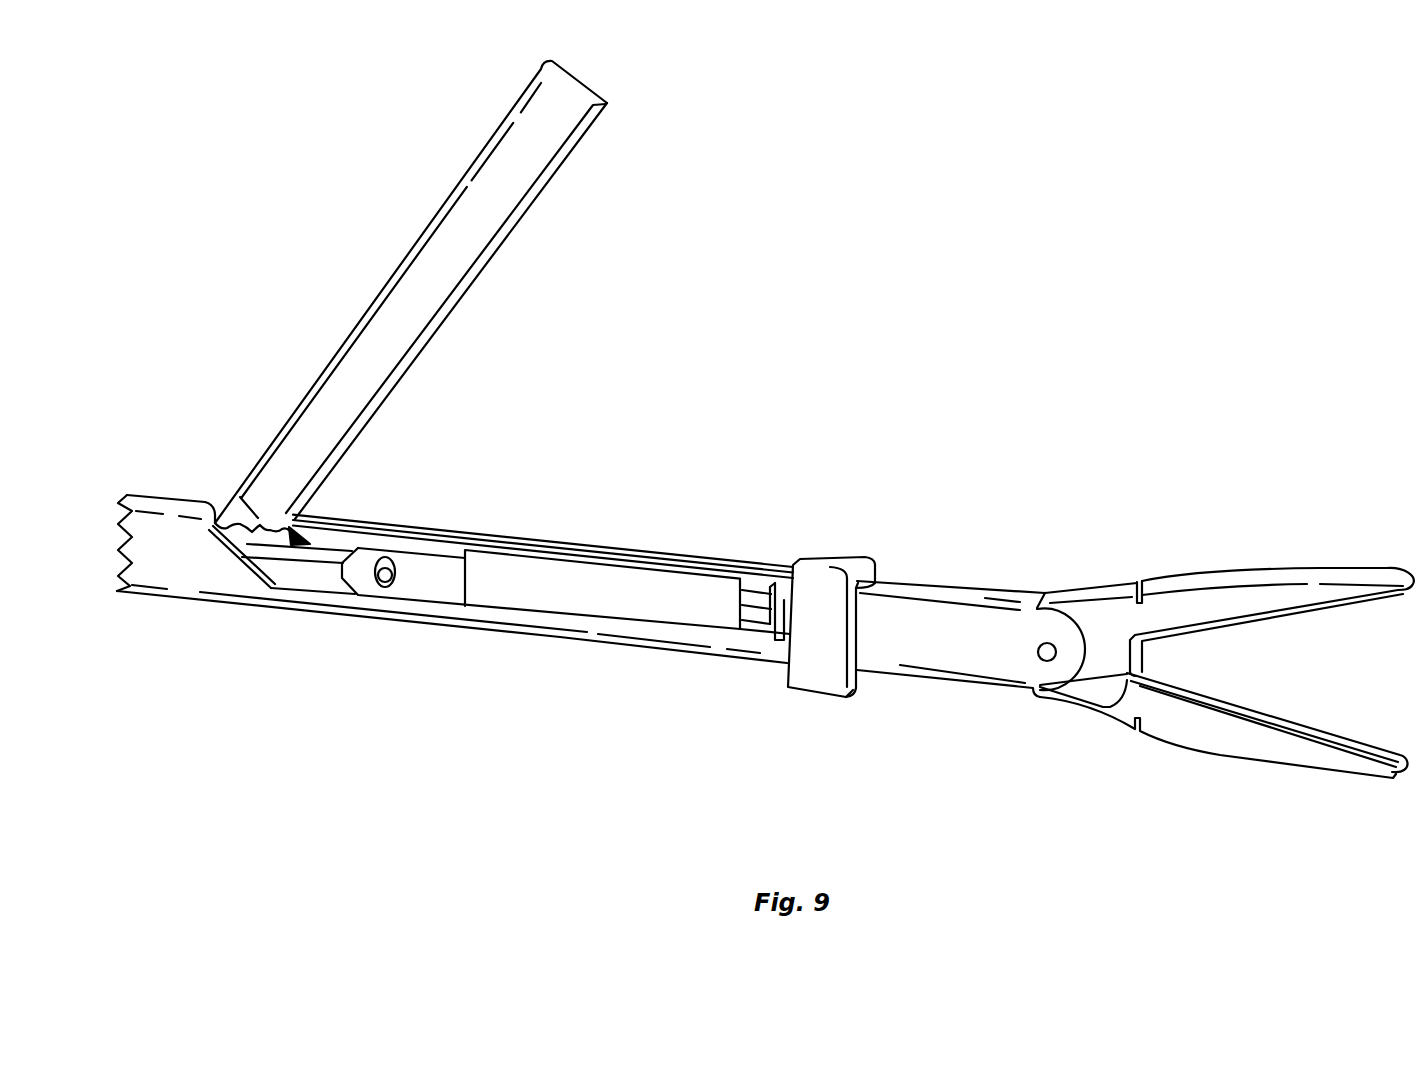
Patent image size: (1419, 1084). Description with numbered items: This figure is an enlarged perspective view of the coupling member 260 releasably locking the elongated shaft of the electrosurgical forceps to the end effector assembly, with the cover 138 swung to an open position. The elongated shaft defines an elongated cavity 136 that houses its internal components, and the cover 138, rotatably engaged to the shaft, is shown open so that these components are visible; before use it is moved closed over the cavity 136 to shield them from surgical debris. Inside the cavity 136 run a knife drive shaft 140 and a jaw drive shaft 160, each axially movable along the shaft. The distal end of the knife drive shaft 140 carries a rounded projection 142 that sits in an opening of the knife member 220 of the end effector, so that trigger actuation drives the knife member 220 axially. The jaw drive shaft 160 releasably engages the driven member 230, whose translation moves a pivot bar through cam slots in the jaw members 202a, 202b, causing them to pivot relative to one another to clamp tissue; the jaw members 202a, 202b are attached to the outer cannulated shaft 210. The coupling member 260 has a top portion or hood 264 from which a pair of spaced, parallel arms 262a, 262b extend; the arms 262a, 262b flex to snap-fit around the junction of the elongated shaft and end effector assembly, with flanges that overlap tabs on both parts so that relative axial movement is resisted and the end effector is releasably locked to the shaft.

The elongated cavity 136 is at (188, 500).
The cover 138 is at (468, 157).
The knife drive shaft 140 is at (315, 556).
The rounded projection 142 is at (385, 587).
The jaw drive shaft 160 is at (556, 565).
The knife member 220 is at (437, 585).
The driven member 230 is at (757, 622).
The coupling member 260 is at (857, 540).
The arm 262a is at (826, 686).
The arm 262b is at (873, 578).
The hood 264 is at (822, 556).
The outer cannulated shaft 210 is at (972, 661).
The jaw member 202a is at (1270, 575).
The jaw member 202b is at (1259, 753).